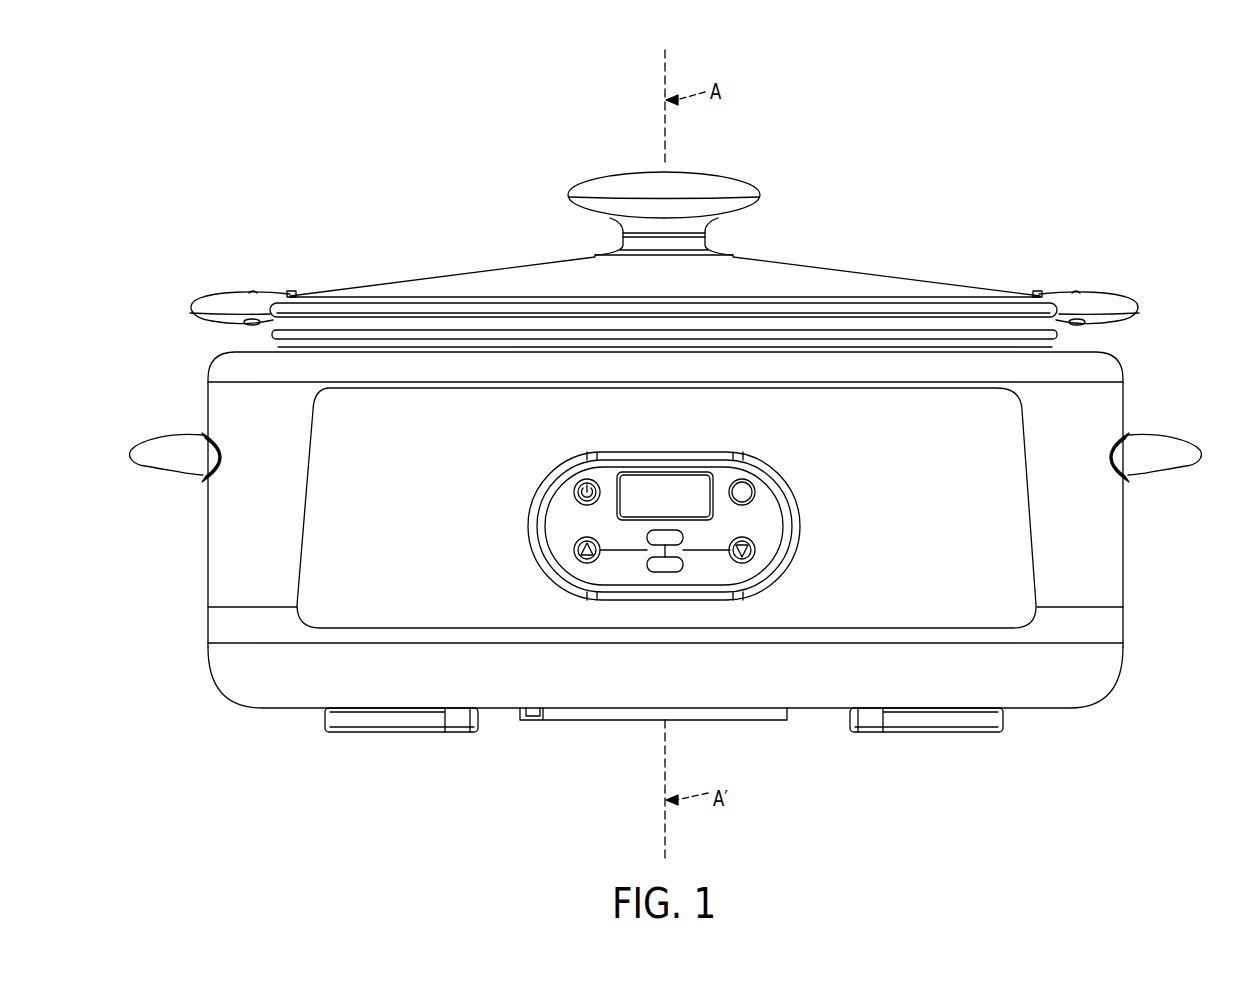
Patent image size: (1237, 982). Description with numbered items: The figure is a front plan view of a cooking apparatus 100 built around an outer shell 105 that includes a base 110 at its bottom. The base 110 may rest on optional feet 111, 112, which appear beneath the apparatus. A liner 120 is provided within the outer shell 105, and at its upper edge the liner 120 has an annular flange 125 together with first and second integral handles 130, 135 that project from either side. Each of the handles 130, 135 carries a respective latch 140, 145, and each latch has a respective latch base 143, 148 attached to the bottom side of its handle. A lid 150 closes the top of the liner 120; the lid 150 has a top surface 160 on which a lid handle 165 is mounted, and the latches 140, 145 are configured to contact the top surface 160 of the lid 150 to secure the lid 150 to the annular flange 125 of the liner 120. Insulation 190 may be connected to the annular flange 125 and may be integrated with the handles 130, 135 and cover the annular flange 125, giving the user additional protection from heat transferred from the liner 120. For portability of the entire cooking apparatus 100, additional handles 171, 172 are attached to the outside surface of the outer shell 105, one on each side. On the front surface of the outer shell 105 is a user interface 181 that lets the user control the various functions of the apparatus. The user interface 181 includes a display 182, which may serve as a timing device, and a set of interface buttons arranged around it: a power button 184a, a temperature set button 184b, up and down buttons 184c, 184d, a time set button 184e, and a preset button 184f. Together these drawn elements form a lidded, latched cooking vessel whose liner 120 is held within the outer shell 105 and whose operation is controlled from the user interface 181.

The cooking apparatus 100 is at (347, 113).
The outer shell 105 is at (208, 570).
The base 110 is at (1078, 710).
The foot 111 is at (367, 734).
The foot 112 is at (903, 734).
The liner 120 is at (924, 316).
The annular flange 125 is at (963, 305).
The first integral handle 130 is at (228, 292).
The second integral handle 135 is at (1108, 290).
The latch 140 is at (287, 292).
The latch base 143 is at (227, 322).
The latch 145 is at (1045, 290).
The latch base 148 is at (1100, 325).
The lid 150 is at (682, 286).
The top surface 160 is at (866, 268).
The lid handle 165 is at (749, 180).
The additional handle 171 is at (158, 470).
The additional handle 172 is at (1148, 478).
The user interface 181 is at (797, 497).
The display 182 is at (700, 487).
The power button 184a is at (580, 482).
The temperature set button 184b is at (752, 480).
The up button 184c is at (570, 553).
The down button 184d is at (760, 553).
The time set button 184e is at (645, 545).
The preset button 184f is at (682, 572).
The insulation 190 is at (502, 325).